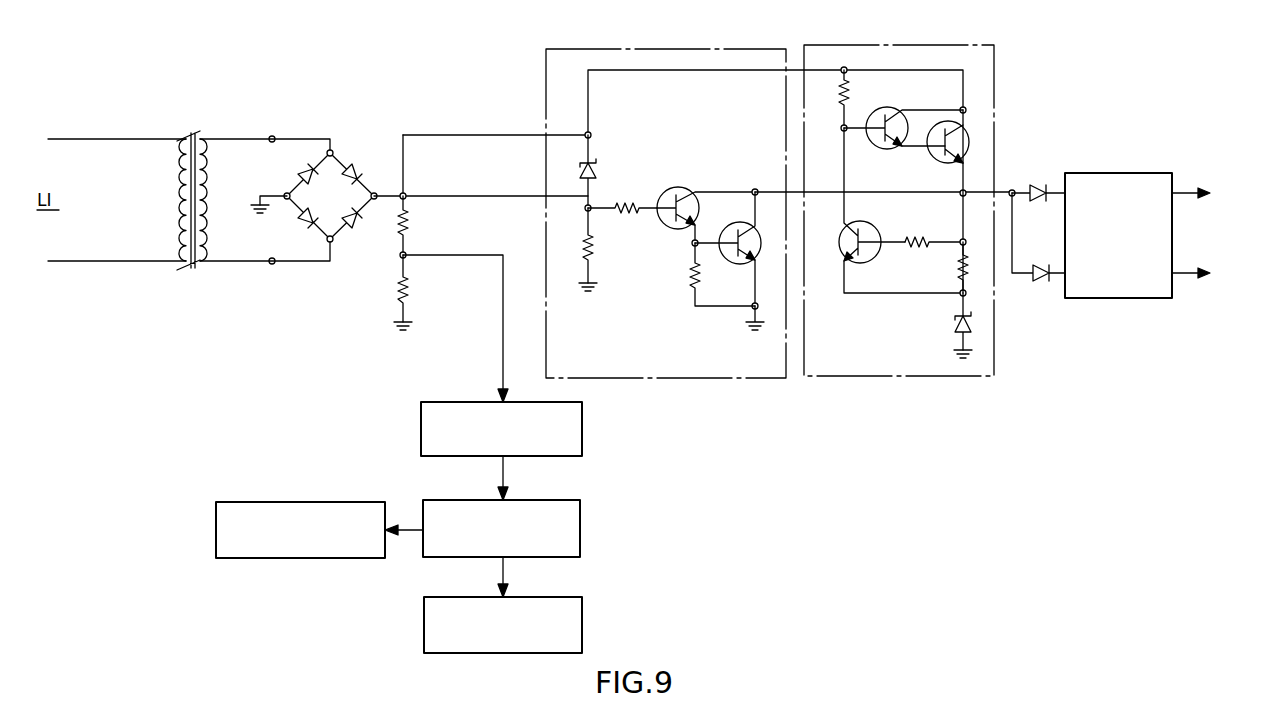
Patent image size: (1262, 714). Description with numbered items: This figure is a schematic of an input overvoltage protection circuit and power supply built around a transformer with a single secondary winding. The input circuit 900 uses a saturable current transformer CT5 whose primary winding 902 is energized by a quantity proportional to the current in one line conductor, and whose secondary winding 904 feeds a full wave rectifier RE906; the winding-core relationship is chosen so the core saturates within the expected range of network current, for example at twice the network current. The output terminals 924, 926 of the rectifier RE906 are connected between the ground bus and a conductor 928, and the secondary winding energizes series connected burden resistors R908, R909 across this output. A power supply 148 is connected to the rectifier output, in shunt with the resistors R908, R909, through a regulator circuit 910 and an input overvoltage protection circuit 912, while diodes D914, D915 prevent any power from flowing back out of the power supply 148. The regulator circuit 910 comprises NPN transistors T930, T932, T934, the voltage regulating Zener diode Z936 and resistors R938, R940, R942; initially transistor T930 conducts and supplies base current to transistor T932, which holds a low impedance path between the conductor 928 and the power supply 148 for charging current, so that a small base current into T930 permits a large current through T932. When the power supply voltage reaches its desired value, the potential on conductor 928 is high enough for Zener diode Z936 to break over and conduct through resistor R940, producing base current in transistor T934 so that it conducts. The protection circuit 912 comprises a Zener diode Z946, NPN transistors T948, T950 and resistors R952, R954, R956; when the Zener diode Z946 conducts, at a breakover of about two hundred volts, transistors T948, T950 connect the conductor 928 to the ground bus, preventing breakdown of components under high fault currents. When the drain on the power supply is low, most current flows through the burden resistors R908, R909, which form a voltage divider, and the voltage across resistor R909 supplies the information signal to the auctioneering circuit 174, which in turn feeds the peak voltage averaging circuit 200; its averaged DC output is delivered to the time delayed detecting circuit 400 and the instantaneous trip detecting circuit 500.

The input circuit 900 is at (297, 319).
The current transformer CT5 is at (190, 135).
The primary winding 902 is at (178, 167).
The secondary winding 904 is at (208, 181).
The full wave rectifier RE906 is at (333, 162).
The output terminal 924 is at (286, 195).
The output terminal 926 is at (364, 204).
The conductor 928 is at (404, 178).
The burden resistor R908 is at (431, 215).
The burden resistor R909 is at (432, 285).
The input overvoltage protection circuit 912 is at (607, 49).
The Zener diode Z946 is at (598, 168).
The resistor R954 is at (633, 188).
The resistor R952 is at (597, 252).
The NPN transistor T948 is at (682, 187).
The NPN transistor T950 is at (720, 225).
The resistor R956 is at (690, 275).
The regulator circuit 910 is at (849, 46).
The resistor R938 is at (847, 102).
The NPN transistor T930 is at (899, 147).
The NPN transistor T932 is at (953, 164).
The NPN transistor T934 is at (885, 219).
The resistor R942 is at (937, 246).
The resistor R940 is at (960, 268).
The voltage regulating Zener diode Z936 is at (953, 323).
The diode D914 is at (1038, 187).
The diode D915 is at (1040, 283).
The power supply 148 is at (1115, 172).
The auctioneering circuit 174 is at (478, 401).
The peak voltage averaging circuit 200 is at (552, 499).
The time delayed detecting circuit 400 is at (543, 595).
The instantaneous trip detecting circuit 500 is at (272, 501).